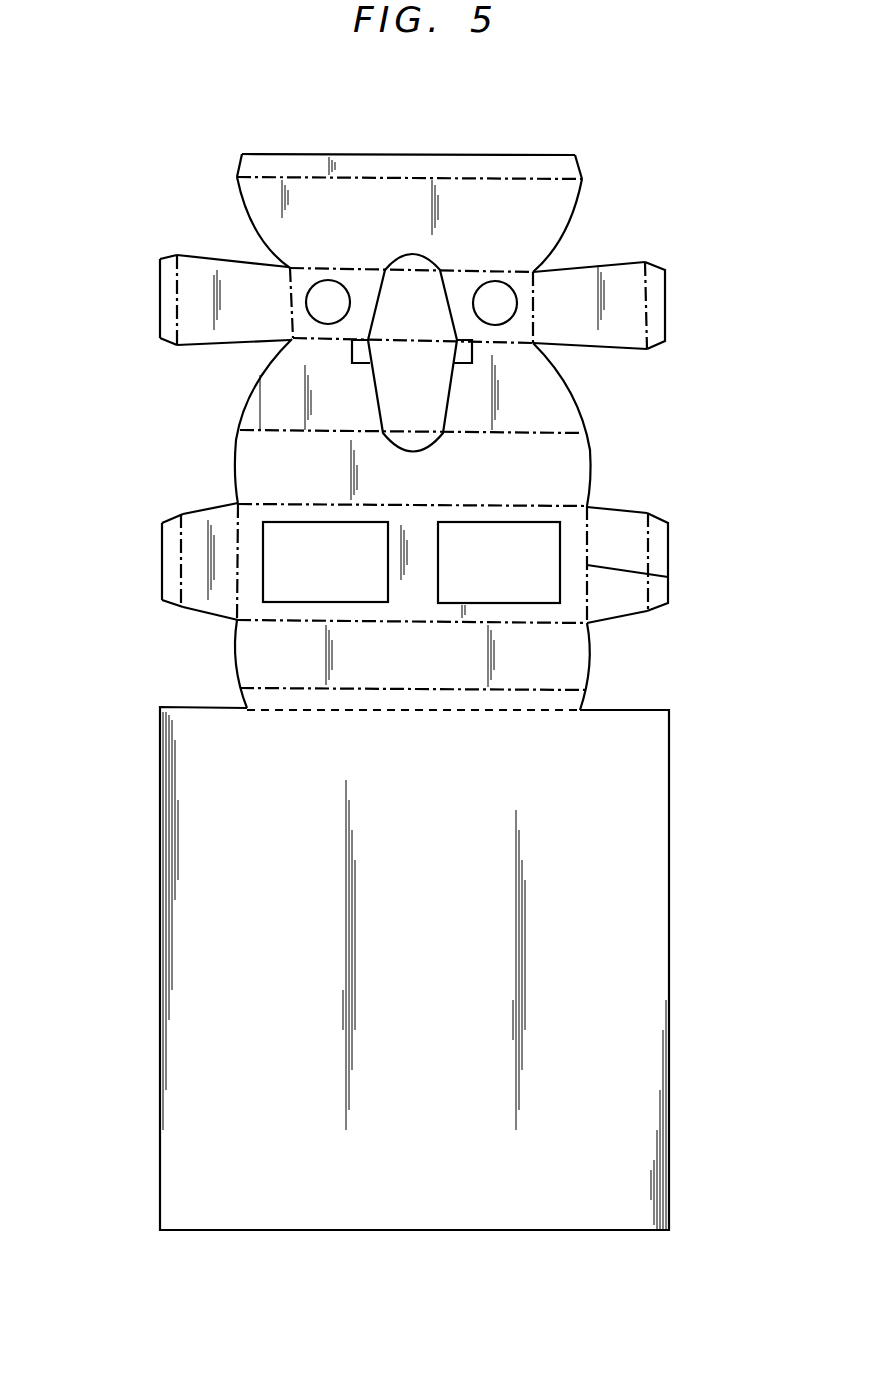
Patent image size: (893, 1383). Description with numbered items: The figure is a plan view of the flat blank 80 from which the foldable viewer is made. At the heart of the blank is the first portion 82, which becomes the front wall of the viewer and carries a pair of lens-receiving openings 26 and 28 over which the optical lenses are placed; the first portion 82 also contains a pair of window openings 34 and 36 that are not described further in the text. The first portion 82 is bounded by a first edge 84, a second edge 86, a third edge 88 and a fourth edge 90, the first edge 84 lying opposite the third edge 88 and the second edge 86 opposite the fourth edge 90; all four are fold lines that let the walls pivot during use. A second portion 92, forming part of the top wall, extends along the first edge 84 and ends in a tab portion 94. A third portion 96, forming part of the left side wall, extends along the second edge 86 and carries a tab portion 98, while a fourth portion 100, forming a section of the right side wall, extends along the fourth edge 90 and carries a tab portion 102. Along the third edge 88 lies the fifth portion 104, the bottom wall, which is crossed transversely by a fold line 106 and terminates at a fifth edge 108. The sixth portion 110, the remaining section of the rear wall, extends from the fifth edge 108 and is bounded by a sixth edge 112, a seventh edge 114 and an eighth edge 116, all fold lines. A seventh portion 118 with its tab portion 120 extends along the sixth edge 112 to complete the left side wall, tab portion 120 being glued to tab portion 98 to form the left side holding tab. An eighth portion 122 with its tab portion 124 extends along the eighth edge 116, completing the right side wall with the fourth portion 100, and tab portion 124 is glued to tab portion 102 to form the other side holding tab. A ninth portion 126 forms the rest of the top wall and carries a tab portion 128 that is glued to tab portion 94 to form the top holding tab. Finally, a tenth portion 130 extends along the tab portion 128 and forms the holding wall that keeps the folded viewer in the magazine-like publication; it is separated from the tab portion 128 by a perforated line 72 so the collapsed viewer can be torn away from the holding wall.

The lens-receiving opening 26 is at (477, 310).
The lens-receiving opening 28 is at (328, 322).
The window opening 34 is at (510, 598).
The window opening 36 is at (322, 598).
The perforated line 72 is at (455, 712).
The blank 80 is at (228, 398).
The first portion 82 is at (523, 278).
The first edge 84 is at (483, 268).
The second edge 86 is at (535, 316).
The third edge 88 is at (455, 363).
The fourth edge 90 is at (290, 302).
The second portion 92 is at (563, 200).
The tab portion 94 is at (562, 162).
The third portion 96 is at (622, 340).
The tab portion 98 is at (655, 302).
The fourth portion 100 is at (193, 267).
The tab portion 102 is at (165, 268).
The fifth portion 104 is at (568, 470).
The fold line 106 is at (525, 432).
The fifth edge 108 is at (490, 503).
The sixth portion 110 is at (572, 530).
The sixth edge 112 is at (668, 577).
The seventh edge 114 is at (447, 623).
The eighth edge 116 is at (233, 575).
The seventh portion 118 is at (630, 606).
The tab portion 120 is at (658, 560).
The eighth portion 122 is at (192, 520).
The tab portion 124 is at (165, 556).
The ninth portion 126 is at (305, 678).
The tab portion 128 is at (583, 700).
The tenth portion 130 is at (610, 830).